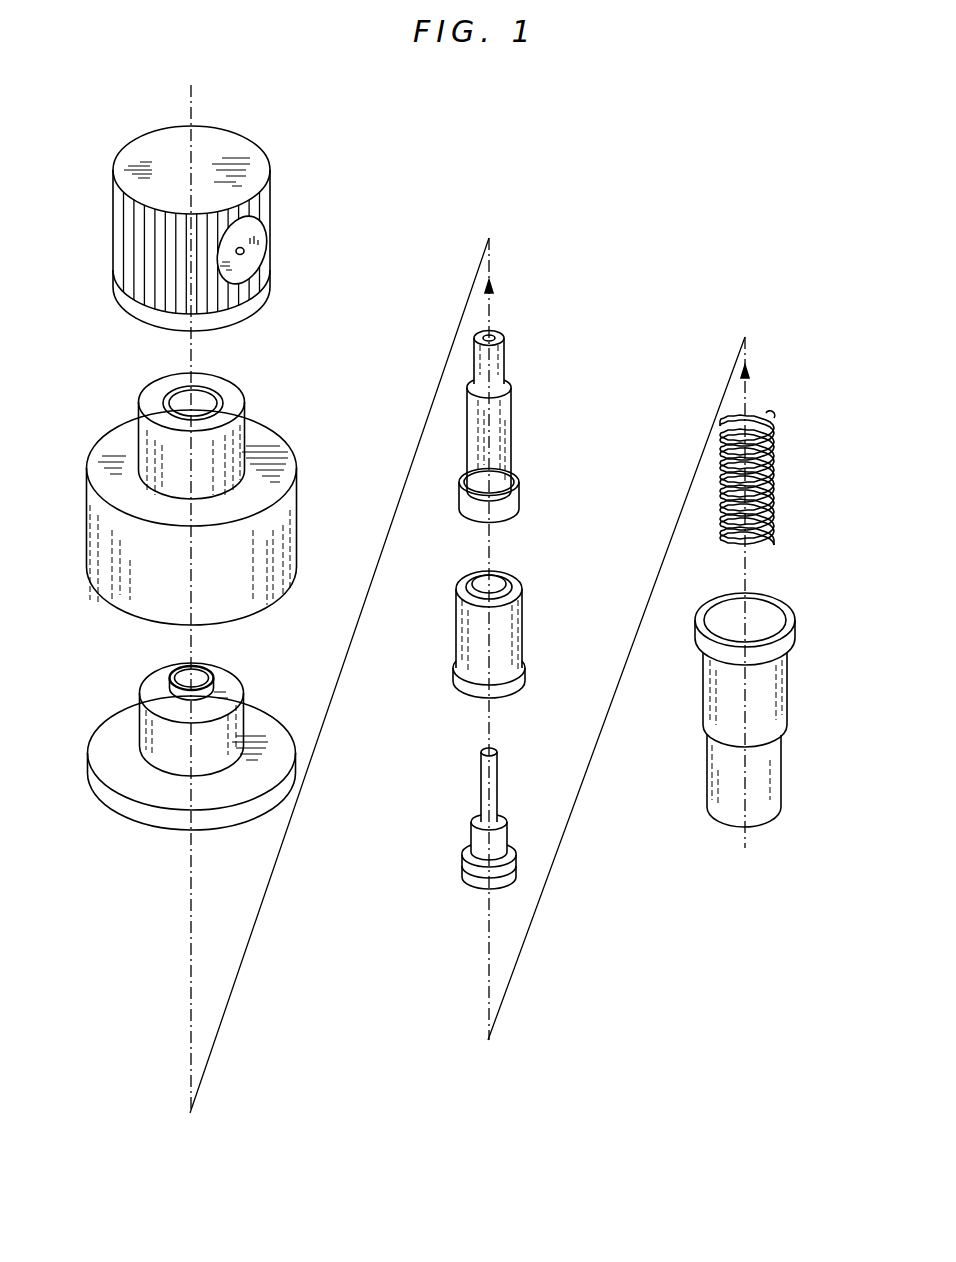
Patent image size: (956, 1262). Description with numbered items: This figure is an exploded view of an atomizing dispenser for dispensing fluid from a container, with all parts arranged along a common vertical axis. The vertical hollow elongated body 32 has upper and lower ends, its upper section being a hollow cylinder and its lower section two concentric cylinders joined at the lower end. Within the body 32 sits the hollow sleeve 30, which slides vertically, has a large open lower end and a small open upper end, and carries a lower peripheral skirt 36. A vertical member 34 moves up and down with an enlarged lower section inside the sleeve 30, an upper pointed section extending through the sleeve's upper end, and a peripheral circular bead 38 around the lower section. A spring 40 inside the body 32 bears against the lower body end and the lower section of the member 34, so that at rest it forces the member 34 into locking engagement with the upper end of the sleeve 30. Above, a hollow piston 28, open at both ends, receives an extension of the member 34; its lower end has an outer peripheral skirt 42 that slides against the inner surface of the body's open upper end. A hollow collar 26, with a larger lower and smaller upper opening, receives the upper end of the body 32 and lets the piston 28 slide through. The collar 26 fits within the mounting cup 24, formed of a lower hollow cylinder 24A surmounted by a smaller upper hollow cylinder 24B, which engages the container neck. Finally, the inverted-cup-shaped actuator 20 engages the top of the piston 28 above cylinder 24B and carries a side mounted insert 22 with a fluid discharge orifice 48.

The actuator 20 is at (122, 237).
The side mounted insert 22 is at (258, 229).
The fluid discharge orifice 48 is at (247, 254).
The mounting cup 24 is at (267, 455).
The lower hollow cylinder 24A is at (277, 537).
The upper hollow cylinder 24B is at (150, 447).
The hollow collar 26 is at (115, 733).
The hollow piston 28 is at (508, 412).
The outer peripheral skirt 42 is at (508, 504).
The hollow sleeve 30 is at (508, 650).
The lower peripheral skirt 36 is at (515, 690).
The vertical member 34 is at (472, 834).
The peripheral circular bead 38 is at (465, 865).
The spring 40 is at (773, 447).
The vertical hollow elongated body 32 is at (777, 702).